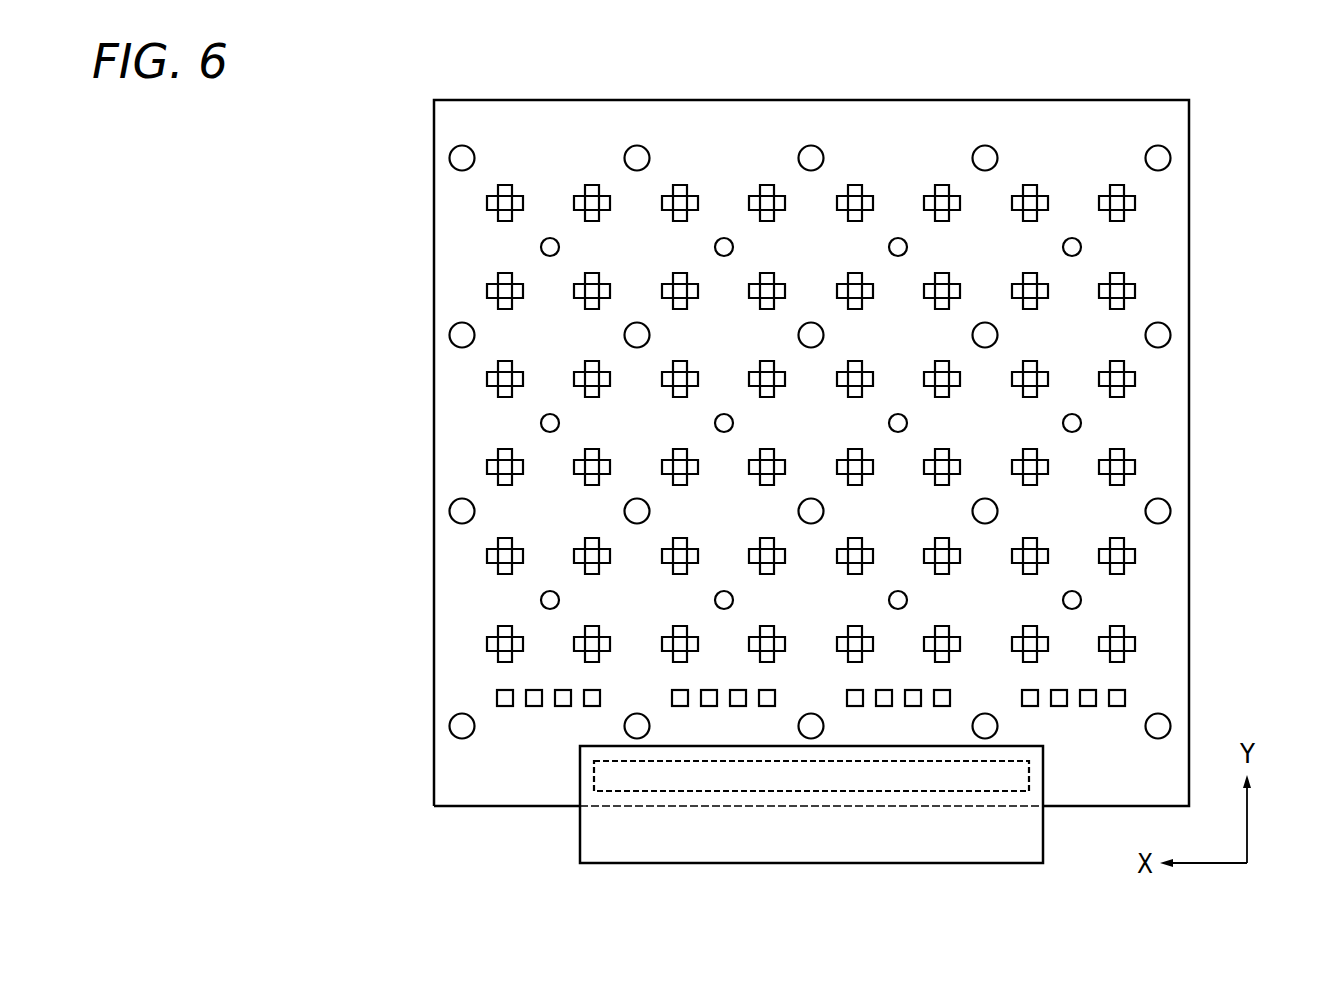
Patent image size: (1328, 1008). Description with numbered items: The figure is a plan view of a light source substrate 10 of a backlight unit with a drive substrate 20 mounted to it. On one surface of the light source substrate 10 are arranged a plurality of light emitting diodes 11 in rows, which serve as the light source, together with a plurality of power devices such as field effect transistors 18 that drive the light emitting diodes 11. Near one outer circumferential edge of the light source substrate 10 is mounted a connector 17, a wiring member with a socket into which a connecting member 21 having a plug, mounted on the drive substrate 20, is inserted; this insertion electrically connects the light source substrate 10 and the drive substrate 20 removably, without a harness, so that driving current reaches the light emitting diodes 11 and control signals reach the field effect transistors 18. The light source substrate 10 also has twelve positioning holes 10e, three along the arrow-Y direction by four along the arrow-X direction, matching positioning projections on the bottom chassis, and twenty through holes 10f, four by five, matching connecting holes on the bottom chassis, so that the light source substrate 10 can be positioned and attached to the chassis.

The light source substrate 10 is at (1214, 248).
The light emitting diode 11 is at (490, 553).
The connector 17 is at (811, 842).
The connecting member 21 is at (812, 775).
The field effect transistor 18 is at (497, 697).
The positioning hole 10e is at (1075, 599).
The through hole 10f is at (1158, 724).
The drive substrate 20 is at (691, 845).